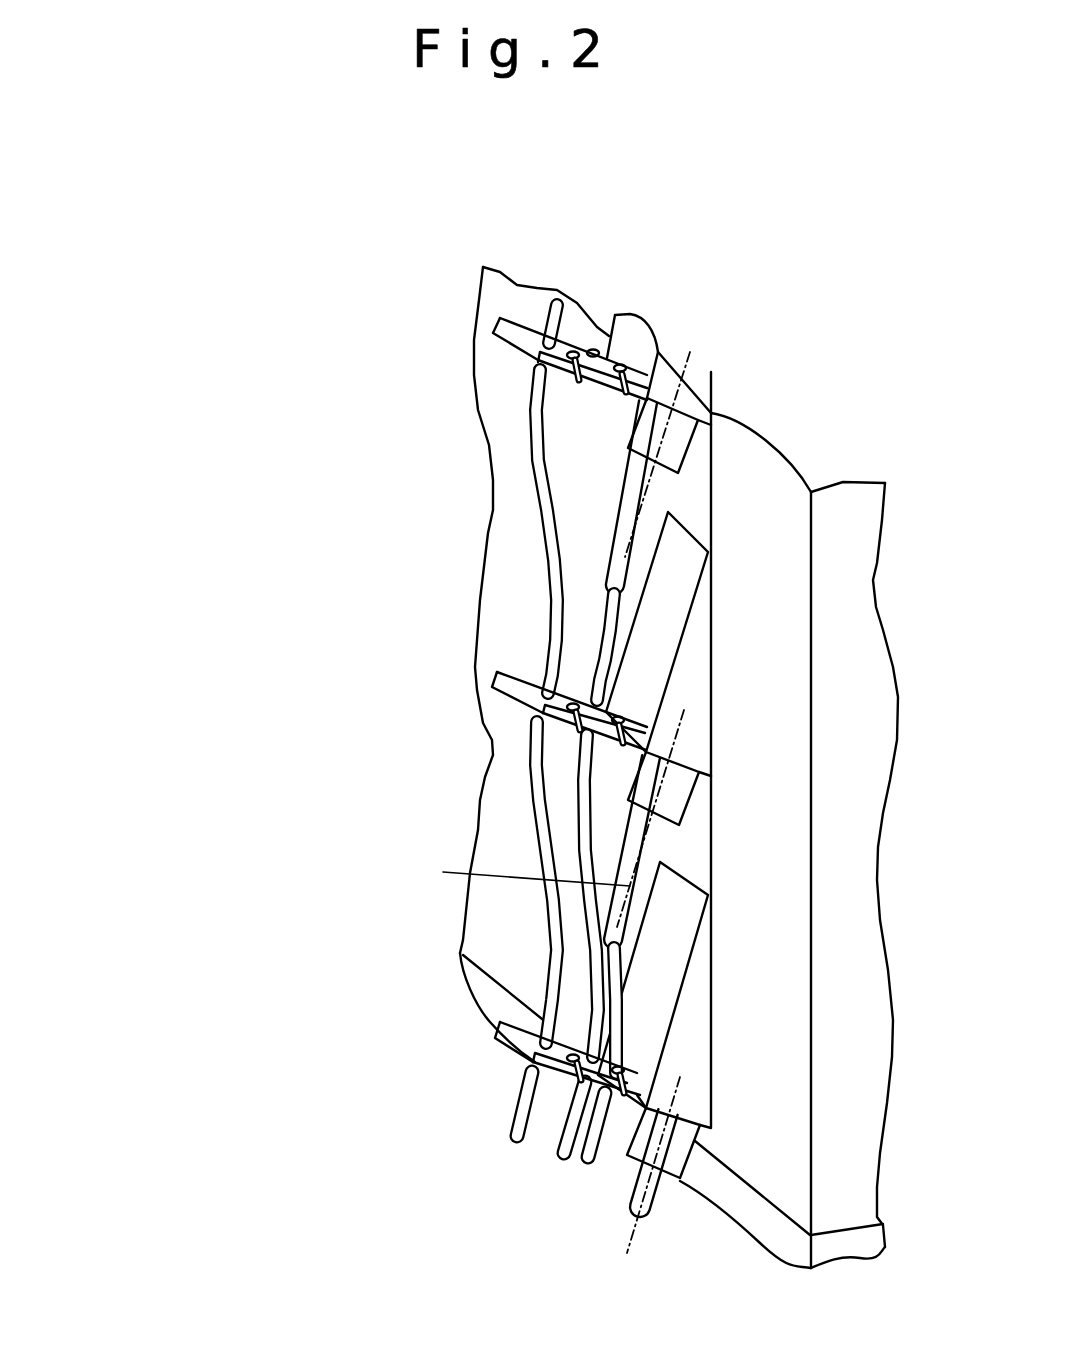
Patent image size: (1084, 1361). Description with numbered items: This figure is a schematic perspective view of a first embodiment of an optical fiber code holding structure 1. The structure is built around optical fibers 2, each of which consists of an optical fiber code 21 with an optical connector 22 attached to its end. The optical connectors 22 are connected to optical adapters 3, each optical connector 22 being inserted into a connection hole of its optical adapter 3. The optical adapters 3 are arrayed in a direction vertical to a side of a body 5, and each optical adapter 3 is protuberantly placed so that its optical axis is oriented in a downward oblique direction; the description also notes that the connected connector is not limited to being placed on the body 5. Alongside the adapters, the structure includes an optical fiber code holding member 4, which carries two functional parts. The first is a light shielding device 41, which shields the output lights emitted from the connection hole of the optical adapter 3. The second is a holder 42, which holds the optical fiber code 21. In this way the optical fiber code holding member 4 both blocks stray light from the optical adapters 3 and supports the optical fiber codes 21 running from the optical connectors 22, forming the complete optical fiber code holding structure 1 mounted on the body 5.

The optical fiber code holding structure 1 is at (627, 217).
The optical fibers 2 is at (163, 567).
The optical fiber codes 21 is at (612, 608).
The optical connectors 22 is at (633, 455).
The optical adapters 3 is at (640, 665).
The optical fiber code holding member 4 is at (382, 706).
The light shielding devices 41 is at (590, 697).
The holder 42 is at (625, 726).
The body 5 is at (507, 947).